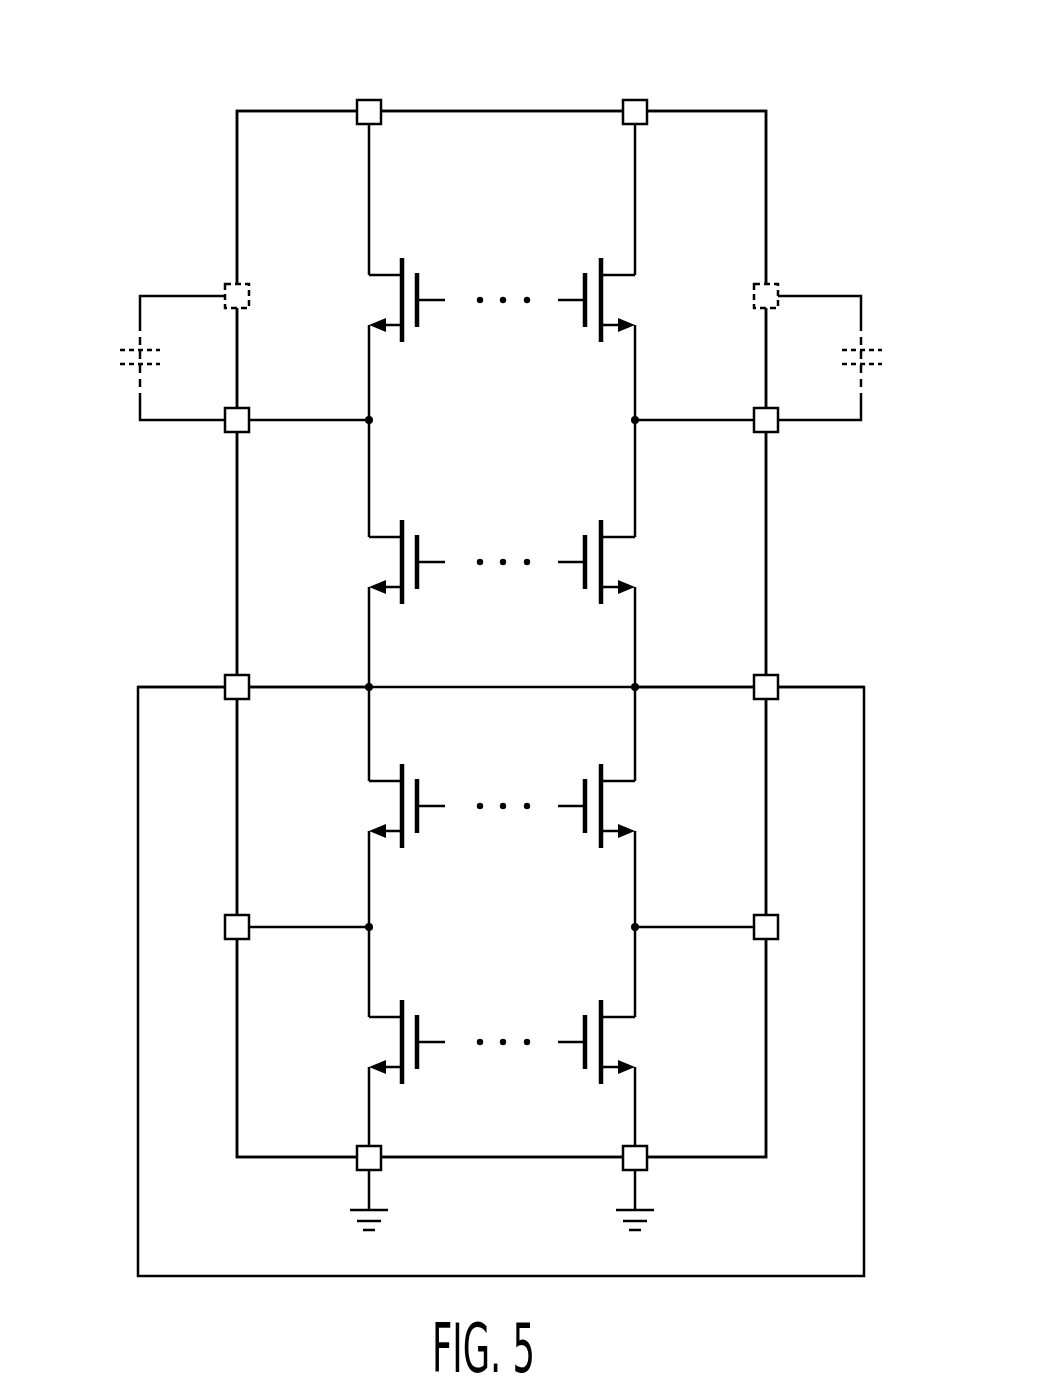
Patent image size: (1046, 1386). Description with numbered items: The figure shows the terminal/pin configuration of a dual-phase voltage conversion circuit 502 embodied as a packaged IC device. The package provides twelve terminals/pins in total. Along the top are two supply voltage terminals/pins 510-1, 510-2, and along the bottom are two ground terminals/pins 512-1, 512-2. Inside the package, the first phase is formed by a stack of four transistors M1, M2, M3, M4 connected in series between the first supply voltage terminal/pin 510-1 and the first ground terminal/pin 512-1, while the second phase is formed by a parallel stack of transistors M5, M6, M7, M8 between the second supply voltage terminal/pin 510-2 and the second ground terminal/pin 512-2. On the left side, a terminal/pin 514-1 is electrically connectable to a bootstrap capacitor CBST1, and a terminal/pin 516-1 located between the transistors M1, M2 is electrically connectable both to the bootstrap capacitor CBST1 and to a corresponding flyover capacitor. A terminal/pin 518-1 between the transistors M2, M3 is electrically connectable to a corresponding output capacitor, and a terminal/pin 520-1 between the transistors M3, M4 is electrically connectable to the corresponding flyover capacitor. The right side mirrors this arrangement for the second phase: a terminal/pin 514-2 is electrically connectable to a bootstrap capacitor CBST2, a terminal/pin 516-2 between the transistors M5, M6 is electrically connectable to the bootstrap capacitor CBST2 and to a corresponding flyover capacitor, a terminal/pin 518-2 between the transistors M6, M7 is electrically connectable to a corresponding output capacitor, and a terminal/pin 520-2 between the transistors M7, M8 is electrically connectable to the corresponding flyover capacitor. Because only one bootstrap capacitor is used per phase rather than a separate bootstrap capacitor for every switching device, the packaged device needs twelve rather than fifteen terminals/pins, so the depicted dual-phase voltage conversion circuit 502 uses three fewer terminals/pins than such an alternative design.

The dual-phase voltage conversion circuit 502 is at (500, 110).
The VIN terminal/pin 510-1 is at (361, 100).
The VIN terminal/pin 510-2 is at (645, 100).
The GND terminal/pin 512-1 is at (357, 1170).
The GND terminal/pin 512-2 is at (647, 1170).
The terminal/pin 514-1 is at (225, 285).
The terminal/pin 514-2 is at (778, 285).
The terminal/pin 516-1 is at (225, 431).
The terminal/pin 516-2 is at (778, 431).
The terminal/pin 518-1 is at (225, 676).
The terminal/pin 518-2 is at (778, 676).
The terminal/pin 520-1 is at (223, 917).
The terminal/pin 520-2 is at (778, 917).
The transistor M1 is at (396, 300).
The transistor M2 is at (396, 562).
The transistor M3 is at (396, 806).
The transistor M4 is at (396, 1042).
The transistor M5 is at (608, 300).
The transistor M6 is at (608, 562).
The transistor M7 is at (608, 806).
The transistor M8 is at (608, 1042).
The bootstrap capacitor CBST1 is at (135, 358).
The bootstrap capacitor CBST2 is at (869, 358).